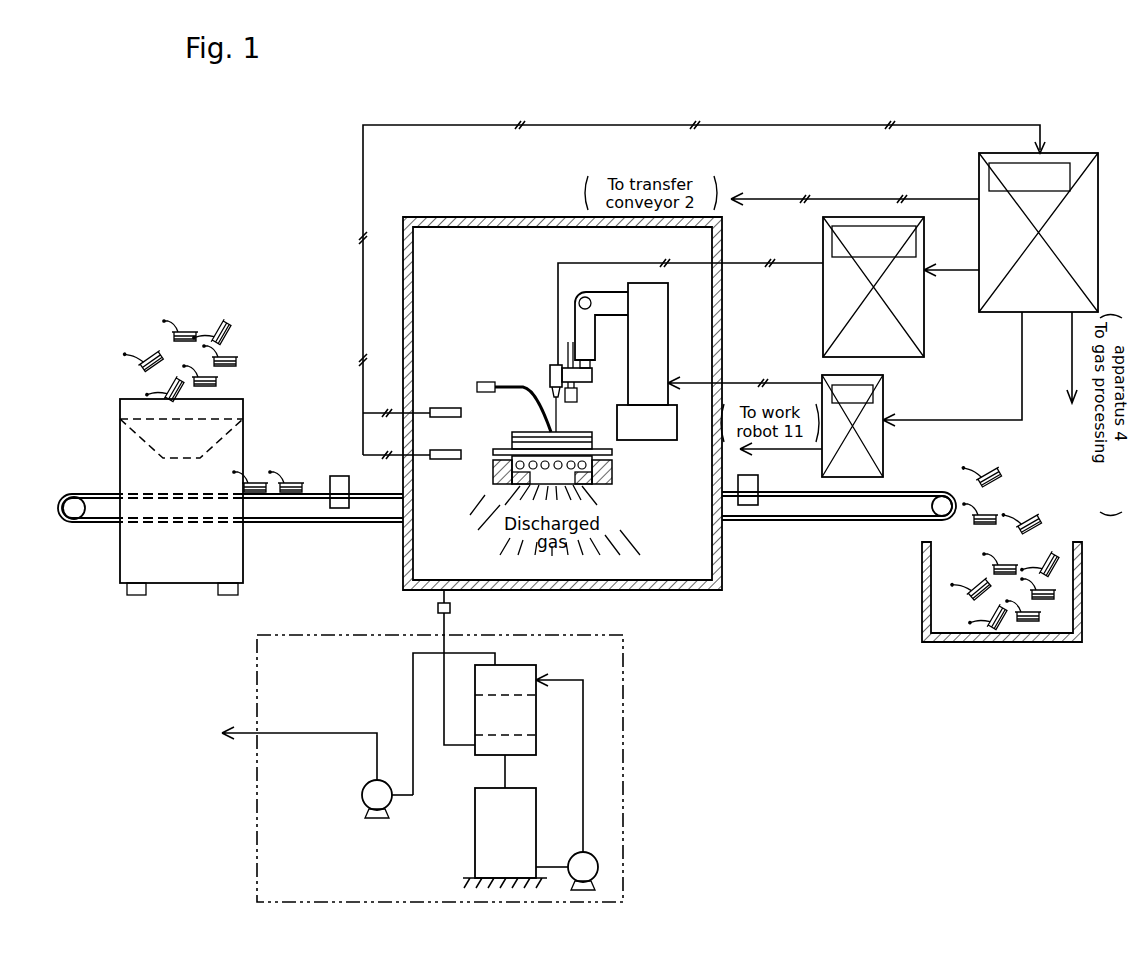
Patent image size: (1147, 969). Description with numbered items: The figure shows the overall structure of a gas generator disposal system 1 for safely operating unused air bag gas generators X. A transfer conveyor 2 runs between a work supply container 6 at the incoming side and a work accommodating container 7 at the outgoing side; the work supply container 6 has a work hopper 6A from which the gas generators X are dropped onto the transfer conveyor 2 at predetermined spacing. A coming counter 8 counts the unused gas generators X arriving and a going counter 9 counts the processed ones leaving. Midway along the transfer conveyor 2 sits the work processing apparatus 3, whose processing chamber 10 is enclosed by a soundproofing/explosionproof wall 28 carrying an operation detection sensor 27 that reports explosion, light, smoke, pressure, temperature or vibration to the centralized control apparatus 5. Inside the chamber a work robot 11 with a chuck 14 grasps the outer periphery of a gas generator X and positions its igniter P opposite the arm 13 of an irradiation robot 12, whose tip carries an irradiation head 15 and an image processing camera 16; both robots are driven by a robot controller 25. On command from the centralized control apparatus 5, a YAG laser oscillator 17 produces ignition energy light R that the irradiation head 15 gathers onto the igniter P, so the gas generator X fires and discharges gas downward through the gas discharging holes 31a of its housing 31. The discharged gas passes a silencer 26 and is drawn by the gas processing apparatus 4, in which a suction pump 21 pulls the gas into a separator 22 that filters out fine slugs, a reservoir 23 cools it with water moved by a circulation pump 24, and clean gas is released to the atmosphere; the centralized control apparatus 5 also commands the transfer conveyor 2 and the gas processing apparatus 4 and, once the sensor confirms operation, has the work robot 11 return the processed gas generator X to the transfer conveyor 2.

The gas generator disposal system 1 is at (326, 176).
The transfer conveyor 2 is at (329, 525).
The work processing apparatus 3 is at (474, 265).
The gas processing apparatus 4 is at (617, 668).
The centralized control apparatus 5 is at (979, 175).
The work supply container 6 is at (200, 583).
The work hopper 6A is at (233, 402).
The work accommodating container 7 is at (922, 598).
The coming counter 8 is at (349, 487).
The going counter 9 is at (758, 484).
The processing chamber 10 is at (550, 248).
The work robot 11 is at (620, 480).
The irradiation robot 12 is at (665, 313).
The arm 13 is at (607, 297).
The chuck 14 is at (615, 476).
The irradiation head 15 is at (550, 378).
The image processing camera 16 is at (582, 392).
The YAG laser oscillator 17 is at (823, 312).
The suction pump 21 is at (362, 795).
The separator 22 is at (528, 747).
The reservoir 23 is at (530, 837).
The circulation pump 24 is at (587, 860).
The robot controller 25 is at (883, 450).
The silencer 26 is at (450, 608).
The operation detection sensor 27 is at (447, 407).
The soundproofing/explosionproof wall 28 is at (450, 217).
The housing 31 is at (585, 487).
The gas discharging holes 31a is at (596, 452).
The igniter P is at (548, 432).
The ignition energy light R is at (562, 430).
The gas generator X is at (540, 484).